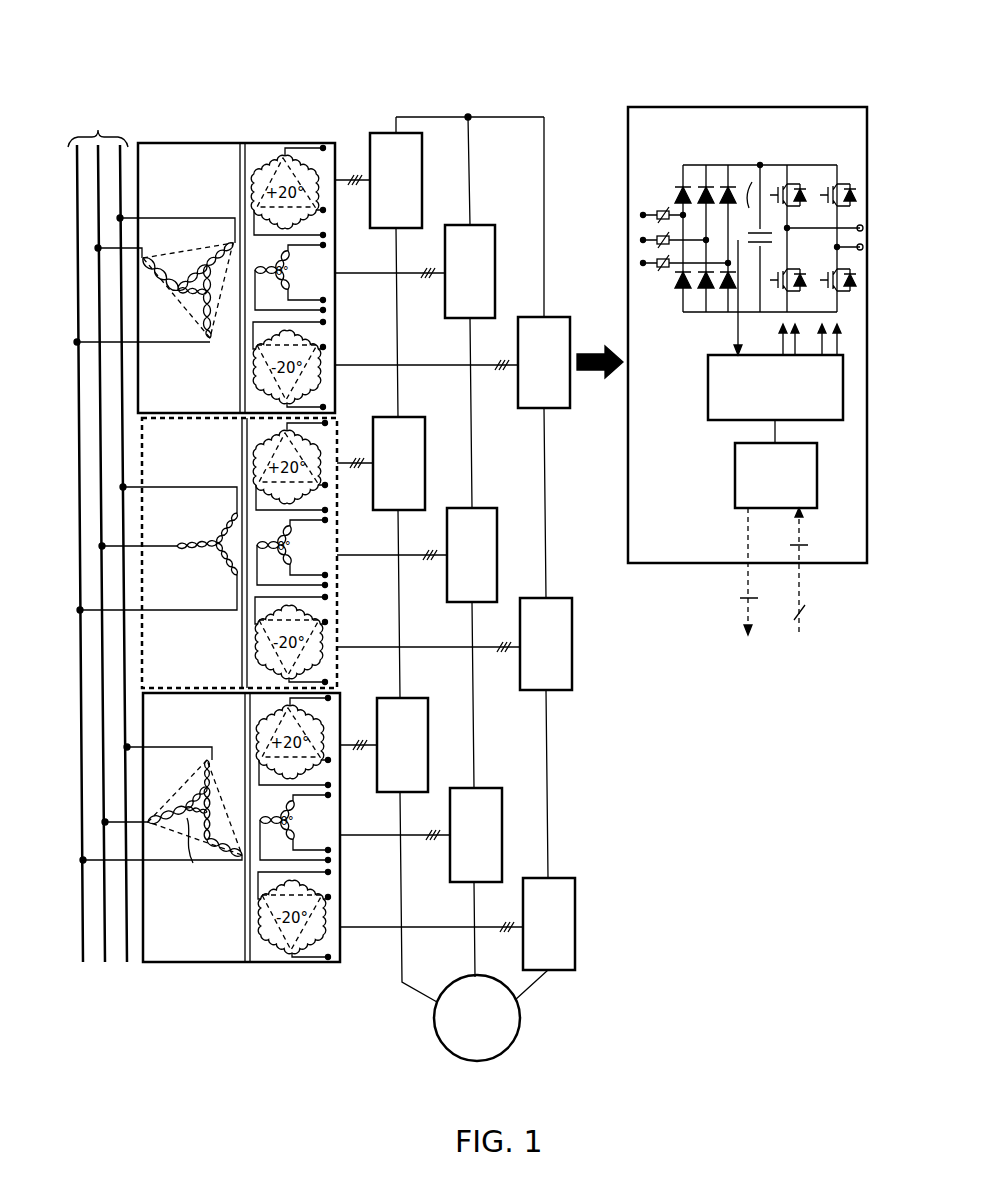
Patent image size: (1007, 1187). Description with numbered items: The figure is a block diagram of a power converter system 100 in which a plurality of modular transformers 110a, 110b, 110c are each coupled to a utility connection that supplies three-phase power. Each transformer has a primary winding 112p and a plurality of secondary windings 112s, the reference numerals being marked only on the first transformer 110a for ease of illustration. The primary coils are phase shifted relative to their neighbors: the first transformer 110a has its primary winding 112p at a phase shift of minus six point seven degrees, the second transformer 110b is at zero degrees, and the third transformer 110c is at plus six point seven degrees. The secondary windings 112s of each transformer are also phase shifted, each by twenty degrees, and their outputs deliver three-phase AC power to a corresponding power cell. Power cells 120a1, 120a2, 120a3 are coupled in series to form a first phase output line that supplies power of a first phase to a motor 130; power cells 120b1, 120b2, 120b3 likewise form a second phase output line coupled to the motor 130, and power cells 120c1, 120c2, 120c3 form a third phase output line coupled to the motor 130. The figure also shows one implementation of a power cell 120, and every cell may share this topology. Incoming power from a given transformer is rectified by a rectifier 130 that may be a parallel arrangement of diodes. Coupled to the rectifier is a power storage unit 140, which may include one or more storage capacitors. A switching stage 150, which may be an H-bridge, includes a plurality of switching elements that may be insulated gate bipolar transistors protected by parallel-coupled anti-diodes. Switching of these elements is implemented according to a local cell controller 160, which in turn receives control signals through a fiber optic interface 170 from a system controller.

The system 100 is at (188, 46).
The first transformer 110a is at (197, 143).
The second transformer 110b is at (142, 656).
The third transformer 110c is at (197, 963).
The primary winding 112p is at (212, 347).
The secondary windings 112s is at (262, 145).
The power cell 120 is at (690, 563).
The power cell 120a1 is at (375, 133).
The power cell 120b1 is at (492, 225).
The power cell 120c1 is at (566, 317).
The power cell 120a2 is at (418, 417).
The power cell 120b2 is at (494, 508).
The power cell 120c2 is at (572, 665).
The power cell 120a3 is at (420, 698).
The power cell 120b3 is at (496, 788).
The power cell 120c3 is at (575, 935).
The motor 130 is at (520, 1018).
The power storage unit 140 is at (792, 155).
The switching stage 150 is at (857, 155).
The local cell controller 160 is at (708, 388).
The fiber optic interface 170 is at (735, 476).